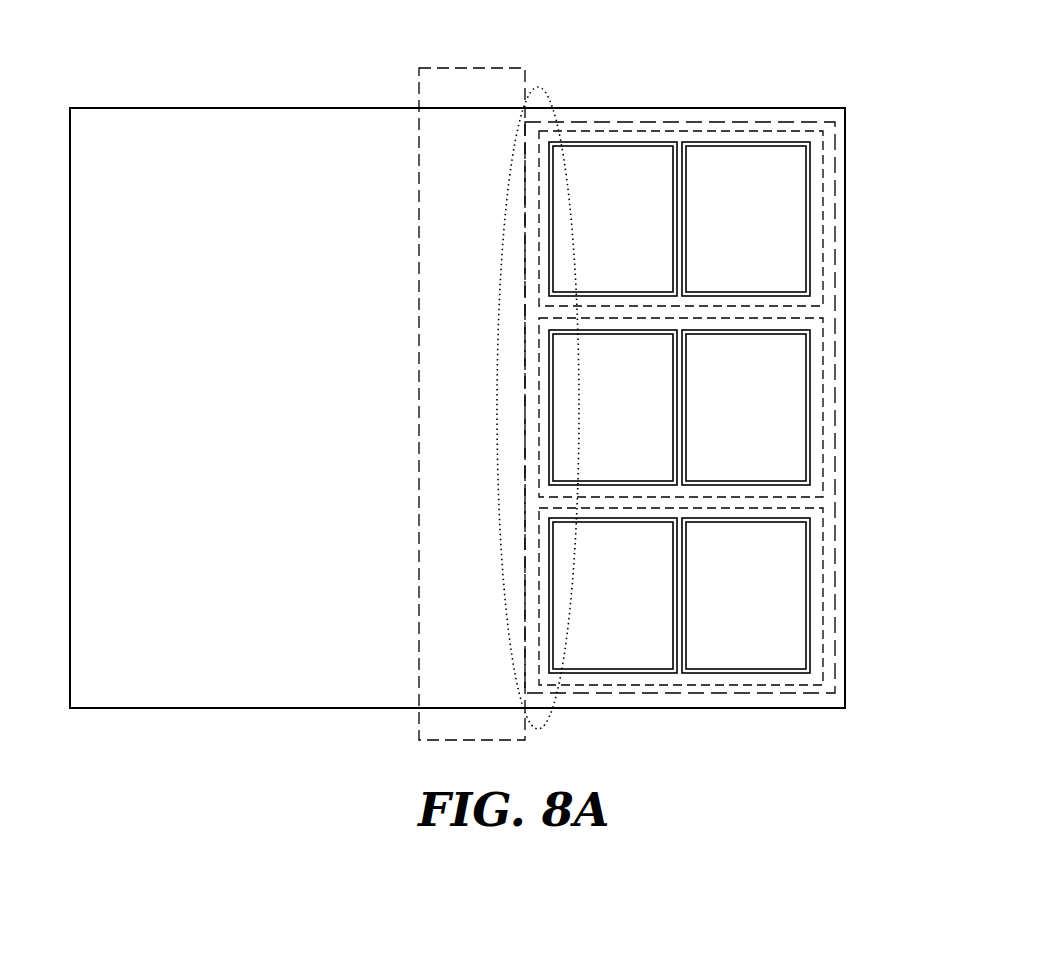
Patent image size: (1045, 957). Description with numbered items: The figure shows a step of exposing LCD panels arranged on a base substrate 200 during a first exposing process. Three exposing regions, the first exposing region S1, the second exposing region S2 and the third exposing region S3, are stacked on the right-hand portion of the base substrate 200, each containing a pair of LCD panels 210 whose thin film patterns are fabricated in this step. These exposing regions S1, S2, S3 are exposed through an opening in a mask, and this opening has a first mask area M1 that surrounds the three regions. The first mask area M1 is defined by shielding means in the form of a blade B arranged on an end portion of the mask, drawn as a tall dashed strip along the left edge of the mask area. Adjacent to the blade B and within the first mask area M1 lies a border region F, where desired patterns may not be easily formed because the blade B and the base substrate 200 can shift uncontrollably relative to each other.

The base substrate 200 is at (849, 158).
The display panel 210 is at (810, 282).
The first exposing region S1 is at (823, 221).
The second exposing region S2 is at (823, 409).
The third exposing region S3 is at (823, 596).
The first mask area M1 is at (682, 696).
The blade B is at (462, 68).
The border region F is at (536, 87).